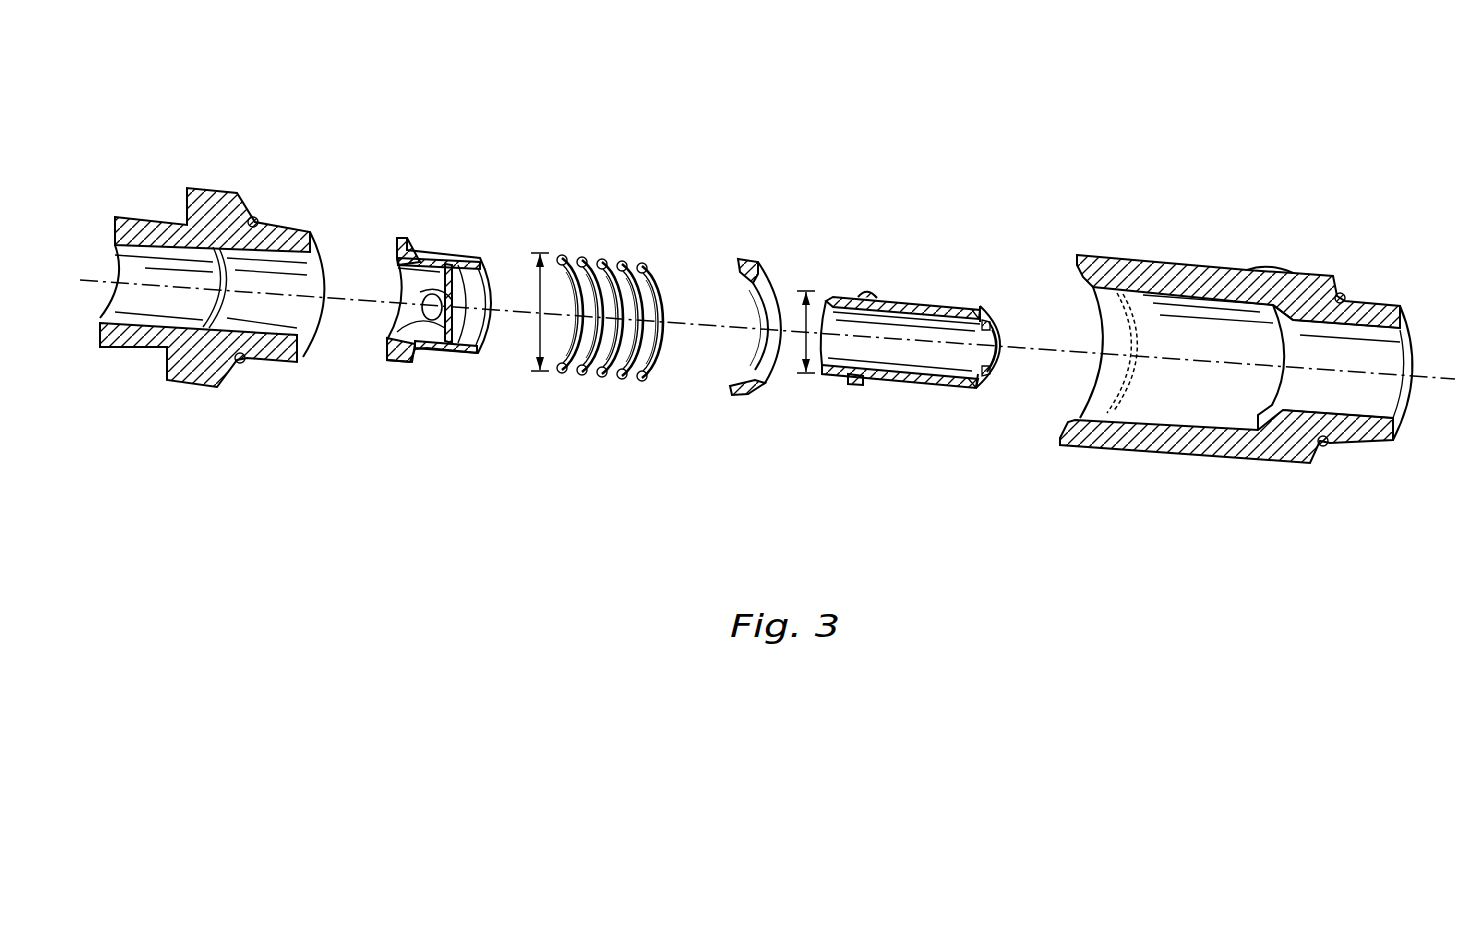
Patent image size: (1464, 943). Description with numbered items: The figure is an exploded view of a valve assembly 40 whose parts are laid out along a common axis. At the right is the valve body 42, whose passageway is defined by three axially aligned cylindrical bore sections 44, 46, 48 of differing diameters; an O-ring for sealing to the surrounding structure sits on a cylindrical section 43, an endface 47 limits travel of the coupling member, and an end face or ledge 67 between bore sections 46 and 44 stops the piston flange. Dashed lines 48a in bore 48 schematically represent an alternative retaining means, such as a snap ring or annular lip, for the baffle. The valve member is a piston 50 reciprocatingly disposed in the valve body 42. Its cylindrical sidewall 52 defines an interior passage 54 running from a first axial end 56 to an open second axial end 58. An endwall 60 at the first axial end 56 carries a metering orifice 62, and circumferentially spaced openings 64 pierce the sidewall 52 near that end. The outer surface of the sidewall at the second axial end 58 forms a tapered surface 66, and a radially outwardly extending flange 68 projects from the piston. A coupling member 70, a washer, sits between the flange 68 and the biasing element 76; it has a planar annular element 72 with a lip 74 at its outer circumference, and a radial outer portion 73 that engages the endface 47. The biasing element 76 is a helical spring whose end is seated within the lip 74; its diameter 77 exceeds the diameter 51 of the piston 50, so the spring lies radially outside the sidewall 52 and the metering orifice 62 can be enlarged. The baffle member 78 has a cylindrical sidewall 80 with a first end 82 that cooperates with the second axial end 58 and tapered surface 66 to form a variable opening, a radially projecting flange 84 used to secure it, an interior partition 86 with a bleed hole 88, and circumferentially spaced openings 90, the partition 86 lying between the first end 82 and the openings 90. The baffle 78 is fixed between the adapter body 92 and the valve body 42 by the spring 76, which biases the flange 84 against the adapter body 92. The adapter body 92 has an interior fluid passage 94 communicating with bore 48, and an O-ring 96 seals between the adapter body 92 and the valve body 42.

The valve assembly 40 is at (962, 96).
The valve body 42 is at (1251, 344).
The cylindrical section 43 is at (1385, 445).
The cylindrical bore section 44 is at (1368, 398).
The cylindrical bore section 46 is at (1258, 442).
The endface 47 is at (1272, 265).
The cylindrical bore section 48 is at (1165, 402).
The dashed lines 48a is at (1122, 338).
The piston 50 is at (912, 315).
The diameter 51 is at (805, 288).
The cylindrical sidewall 52 is at (884, 388).
The interior passage 54 is at (928, 382).
The first axial end 56 is at (1006, 320).
The second axial end 58 is at (830, 380).
The endwall 60 is at (992, 342).
The metering orifice 62 is at (988, 378).
The circumferentially spaced openings 64 is at (970, 306).
The tapered surface 66 is at (831, 298).
The end face or ledge 67 is at (1338, 292).
The radially outwardly extending flange 68 is at (866, 289).
The coupling member 70 is at (725, 331).
The planar annular element 72 is at (758, 396).
The radial outer portion 73 is at (748, 400).
The lip 74 is at (738, 263).
The biasing element 76 is at (586, 258).
The diameter 77 is at (538, 265).
The baffle member 78 is at (424, 294).
The cylindrical sidewall 80 is at (446, 335).
The first end 82 is at (470, 352).
The radially projecting flange 84 is at (398, 235).
The interior partition 86 is at (462, 260).
The bleed hole 88 is at (430, 320).
The circumferentially spaced openings 90 is at (398, 345).
The adapter body 92 is at (212, 268).
The interior fluid passage 94 is at (262, 328).
The O-ring 96 is at (258, 217).